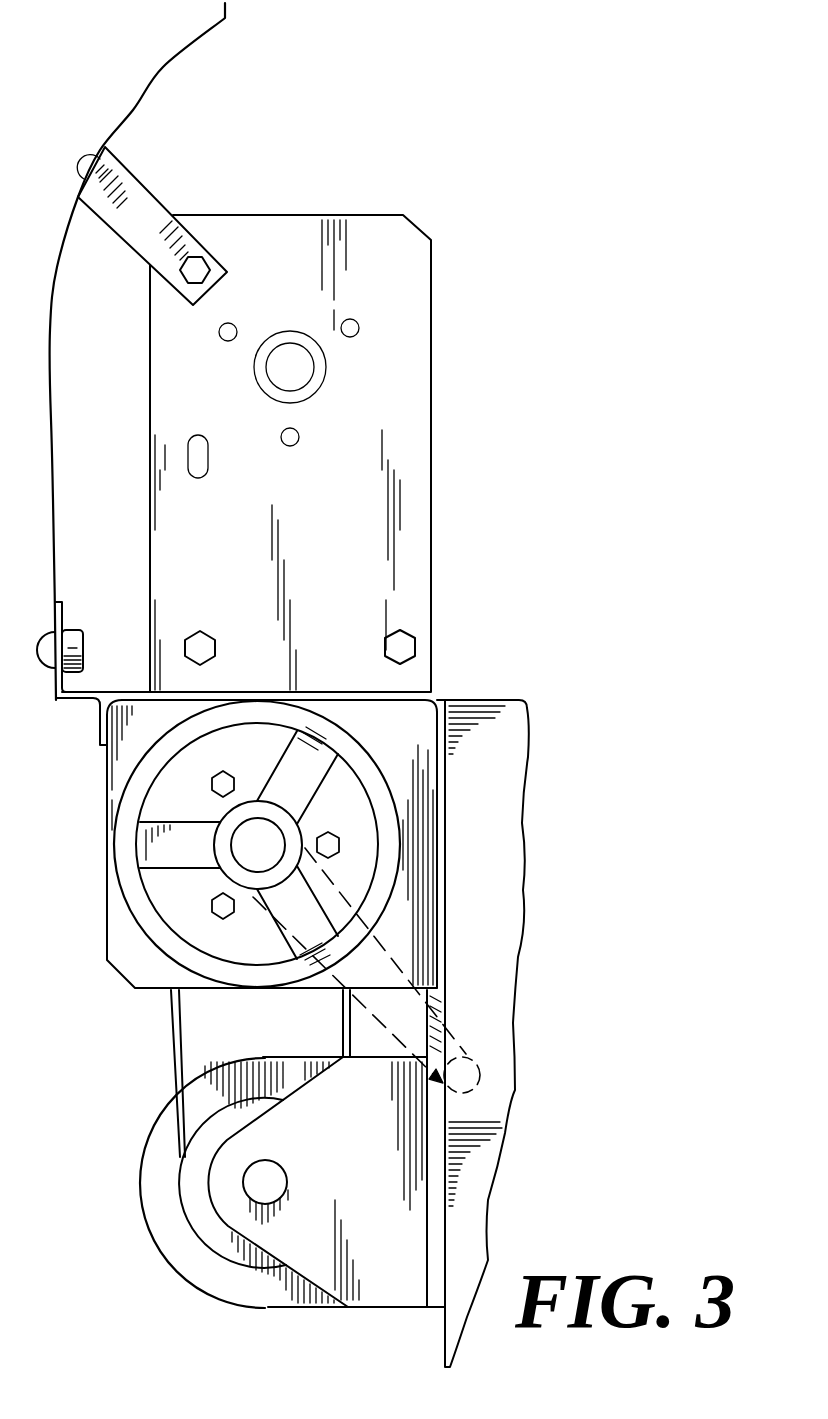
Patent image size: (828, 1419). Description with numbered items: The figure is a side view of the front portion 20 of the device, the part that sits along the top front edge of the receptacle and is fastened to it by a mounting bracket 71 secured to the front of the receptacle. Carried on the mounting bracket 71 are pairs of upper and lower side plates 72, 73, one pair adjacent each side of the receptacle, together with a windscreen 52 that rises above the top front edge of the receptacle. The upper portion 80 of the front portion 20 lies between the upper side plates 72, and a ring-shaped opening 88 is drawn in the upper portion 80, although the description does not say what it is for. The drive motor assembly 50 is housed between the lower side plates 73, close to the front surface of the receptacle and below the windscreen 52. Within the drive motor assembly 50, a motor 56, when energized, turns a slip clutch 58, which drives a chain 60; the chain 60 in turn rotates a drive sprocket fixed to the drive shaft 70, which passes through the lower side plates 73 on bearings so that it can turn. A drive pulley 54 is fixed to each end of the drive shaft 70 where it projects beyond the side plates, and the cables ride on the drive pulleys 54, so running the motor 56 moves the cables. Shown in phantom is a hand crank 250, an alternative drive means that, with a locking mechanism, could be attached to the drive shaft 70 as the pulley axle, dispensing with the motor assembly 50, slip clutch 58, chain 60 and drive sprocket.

The front portion 20 is at (622, 682).
The drive motor assembly 50 is at (150, 1269).
The windscreen 52 is at (163, 67).
The drive pulley 54 is at (140, 898).
The motor 56 is at (140, 1202).
The slip clutch 58 is at (237, 1263).
The chain 60 is at (176, 1030).
The drive shaft 70 is at (247, 840).
The mounting bracket 71 is at (435, 756).
The upper side plate 72 is at (416, 646).
The lower side plate 73 is at (417, 905).
The upper portion 80 is at (460, 275).
The bearing ring 88 is at (297, 370).
The hand crank 250 is at (464, 1057).